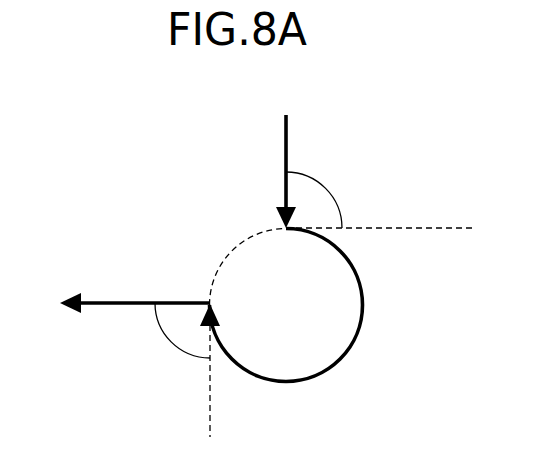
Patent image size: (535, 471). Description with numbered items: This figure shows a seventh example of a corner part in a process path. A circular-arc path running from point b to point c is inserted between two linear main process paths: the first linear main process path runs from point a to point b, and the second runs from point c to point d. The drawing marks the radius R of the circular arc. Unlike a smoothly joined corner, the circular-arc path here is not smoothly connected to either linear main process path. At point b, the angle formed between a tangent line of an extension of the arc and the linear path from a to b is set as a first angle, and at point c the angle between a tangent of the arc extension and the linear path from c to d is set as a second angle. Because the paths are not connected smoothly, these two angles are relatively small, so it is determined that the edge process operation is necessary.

The point a is at (286, 158).
The point b is at (361, 219).
The point c is at (213, 364).
The point d is at (124, 304).
The radius of circular path R is at (355, 323).